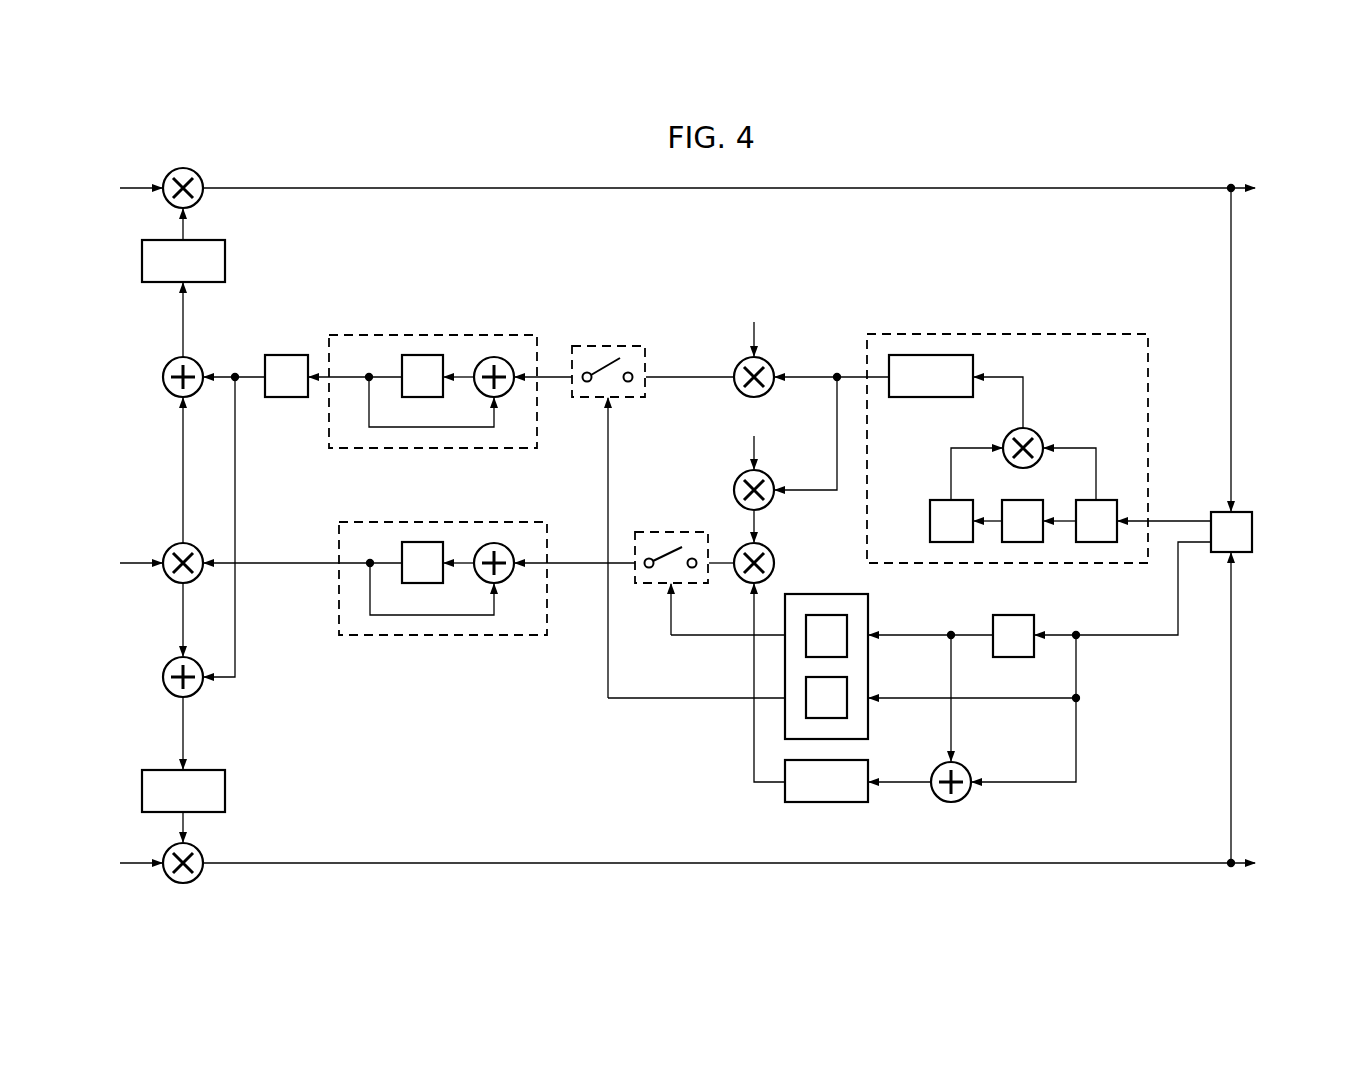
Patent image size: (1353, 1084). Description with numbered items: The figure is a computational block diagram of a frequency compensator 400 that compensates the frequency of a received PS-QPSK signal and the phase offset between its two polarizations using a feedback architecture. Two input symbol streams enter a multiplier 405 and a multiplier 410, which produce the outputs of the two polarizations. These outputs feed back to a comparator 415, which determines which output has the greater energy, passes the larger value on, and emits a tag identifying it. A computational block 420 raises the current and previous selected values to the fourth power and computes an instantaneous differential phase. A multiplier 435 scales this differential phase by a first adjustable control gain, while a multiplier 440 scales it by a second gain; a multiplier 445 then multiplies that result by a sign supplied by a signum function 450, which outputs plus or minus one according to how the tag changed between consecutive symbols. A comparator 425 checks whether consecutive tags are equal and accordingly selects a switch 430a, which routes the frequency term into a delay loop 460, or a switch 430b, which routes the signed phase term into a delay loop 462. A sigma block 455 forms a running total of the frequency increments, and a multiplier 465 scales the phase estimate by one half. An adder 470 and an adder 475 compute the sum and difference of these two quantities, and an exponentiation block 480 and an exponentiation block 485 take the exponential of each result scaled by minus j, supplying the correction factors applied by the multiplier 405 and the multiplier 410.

The frequency compensator 400 is at (913, 143).
The multiplier 405 is at (172, 170).
The multiplier 410 is at (170, 882).
The comparator 415 is at (1253, 531).
The computational block 420 is at (1007, 448).
The comparator 425 is at (869, 667).
The switch 430a is at (608, 345).
The switch 430b is at (672, 531).
The multiplier 435 is at (740, 362).
The multiplier 440 is at (740, 475).
The multiplier 445 is at (775, 565).
The signum function 450 is at (827, 803).
The sigma block 455 is at (285, 354).
The delay loop 460 is at (430, 334).
The delay loop 462 is at (440, 636).
The multiplier 465 is at (170, 581).
The adder 470 is at (172, 358).
The adder 475 is at (170, 695).
The exponentiation block 480 is at (140, 262).
The exponentiation block 485 is at (140, 790).